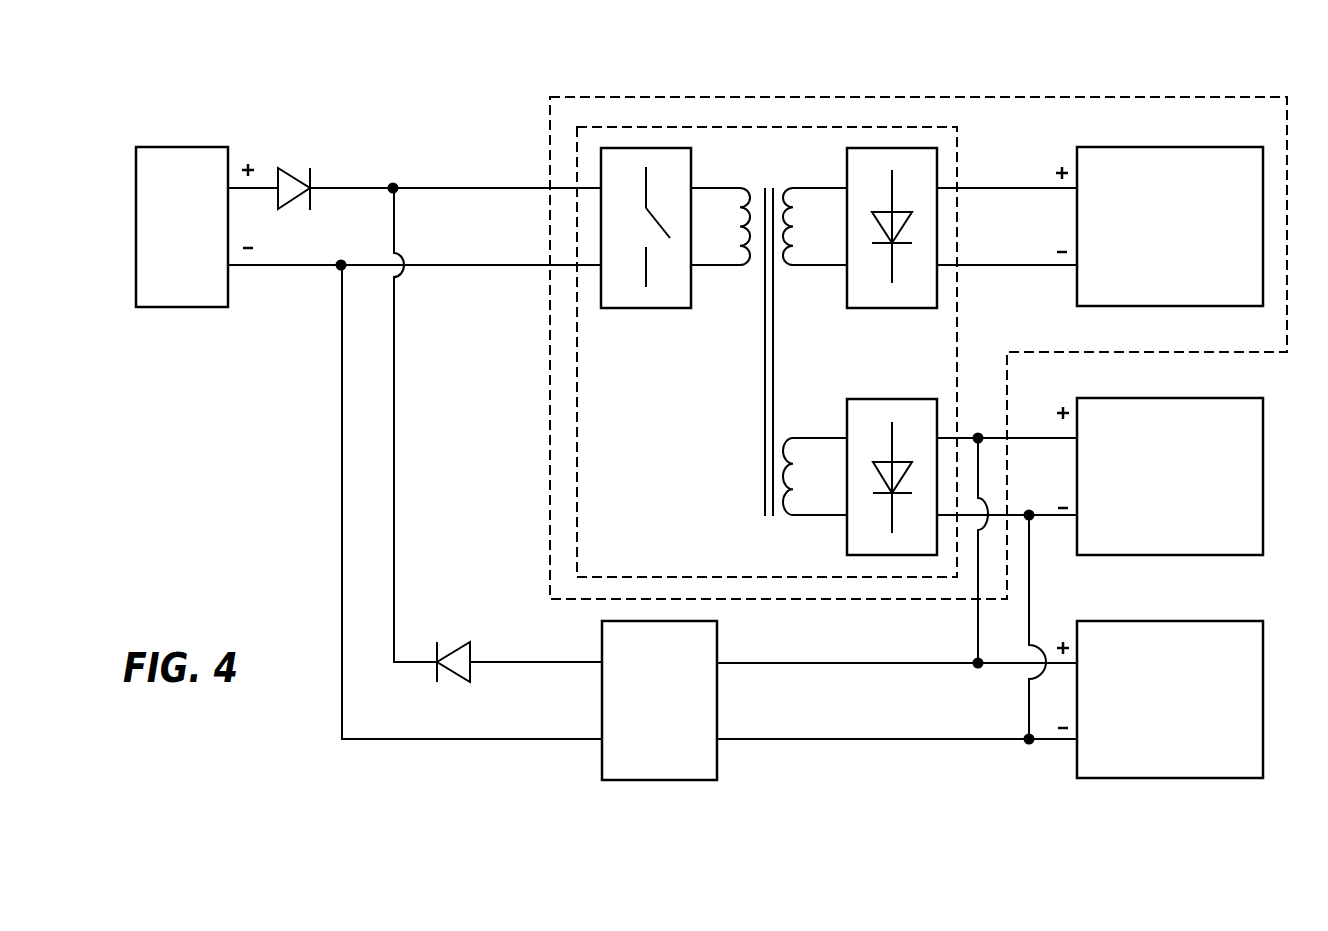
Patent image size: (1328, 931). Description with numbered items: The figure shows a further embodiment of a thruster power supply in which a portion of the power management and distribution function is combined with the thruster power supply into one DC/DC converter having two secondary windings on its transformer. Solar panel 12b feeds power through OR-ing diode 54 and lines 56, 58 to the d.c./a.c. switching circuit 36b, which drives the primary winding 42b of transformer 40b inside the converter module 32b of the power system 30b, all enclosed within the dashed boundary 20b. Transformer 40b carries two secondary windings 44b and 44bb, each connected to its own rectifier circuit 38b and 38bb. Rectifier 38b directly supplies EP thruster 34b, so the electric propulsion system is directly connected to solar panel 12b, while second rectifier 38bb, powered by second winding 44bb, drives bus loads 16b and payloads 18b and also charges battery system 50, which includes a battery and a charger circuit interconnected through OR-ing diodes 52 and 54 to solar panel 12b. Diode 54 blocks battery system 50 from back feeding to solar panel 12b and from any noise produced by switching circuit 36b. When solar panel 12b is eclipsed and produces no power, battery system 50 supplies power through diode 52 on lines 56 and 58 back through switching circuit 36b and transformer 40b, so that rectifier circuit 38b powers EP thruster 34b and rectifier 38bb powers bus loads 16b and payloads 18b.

The solar panel 12b is at (205, 268).
The OR-ing diode 54 is at (293, 173).
The line 58 is at (394, 481).
The line 56 is at (342, 481).
The OR-ing diode 52 is at (453, 656).
The battery system 50 is at (642, 752).
The power system 20b is at (1118, 96).
The power converter 30b is at (892, 48).
The converter module 32b is at (957, 143).
The d.c./a.c. switching circuit 36b is at (640, 308).
The primary winding 42b is at (700, 189).
The transformer 40b is at (761, 328).
The secondary winding 44b is at (834, 188).
The rectifier circuit 38b is at (902, 308).
The second rectifier circuit 38bb is at (907, 399).
The second secondary winding 44bb is at (822, 516).
The EP thruster 34b is at (1147, 283).
The bus loads 16b is at (1147, 519).
The payloads 18b is at (1147, 747).